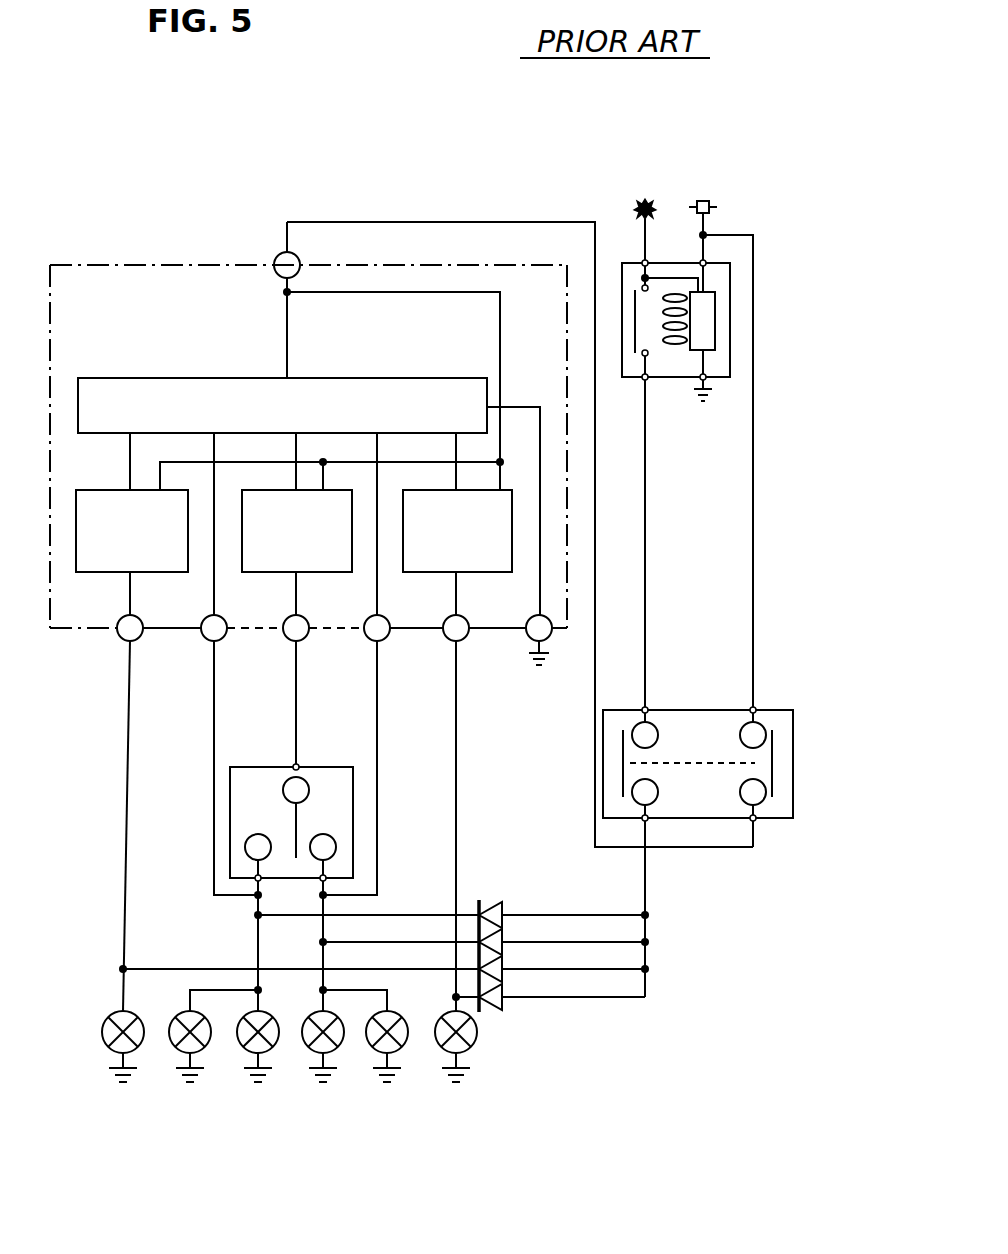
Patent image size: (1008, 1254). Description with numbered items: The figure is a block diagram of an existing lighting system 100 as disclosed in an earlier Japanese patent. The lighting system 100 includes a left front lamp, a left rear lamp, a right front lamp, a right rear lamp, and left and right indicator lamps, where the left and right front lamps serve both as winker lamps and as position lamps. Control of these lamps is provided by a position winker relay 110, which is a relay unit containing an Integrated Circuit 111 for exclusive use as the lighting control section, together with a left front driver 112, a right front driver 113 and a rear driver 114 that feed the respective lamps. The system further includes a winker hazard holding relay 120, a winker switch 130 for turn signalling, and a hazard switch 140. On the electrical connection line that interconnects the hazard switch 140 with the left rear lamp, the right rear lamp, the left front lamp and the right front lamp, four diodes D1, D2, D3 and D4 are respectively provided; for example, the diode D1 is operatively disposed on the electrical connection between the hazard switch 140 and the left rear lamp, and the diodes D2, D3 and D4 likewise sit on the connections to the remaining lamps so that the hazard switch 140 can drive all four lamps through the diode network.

The lighting system 100 is at (384, 205).
The position winker relay 110 is at (156, 263).
The Integrated Circuit (IC) for exclusive use 111 is at (383, 378).
The left front driver 112 is at (148, 575).
The right front driver 113 is at (466, 575).
The rear driver 114 is at (312, 575).
The winker hazard holding relay 120 is at (722, 392).
The winker switch 130 is at (316, 767).
The hazard switch 140 is at (778, 708).
The diode D1 is at (490, 902).
The diode D2 is at (500, 940).
The diode D3 is at (498, 975).
The diode D4 is at (492, 1012).